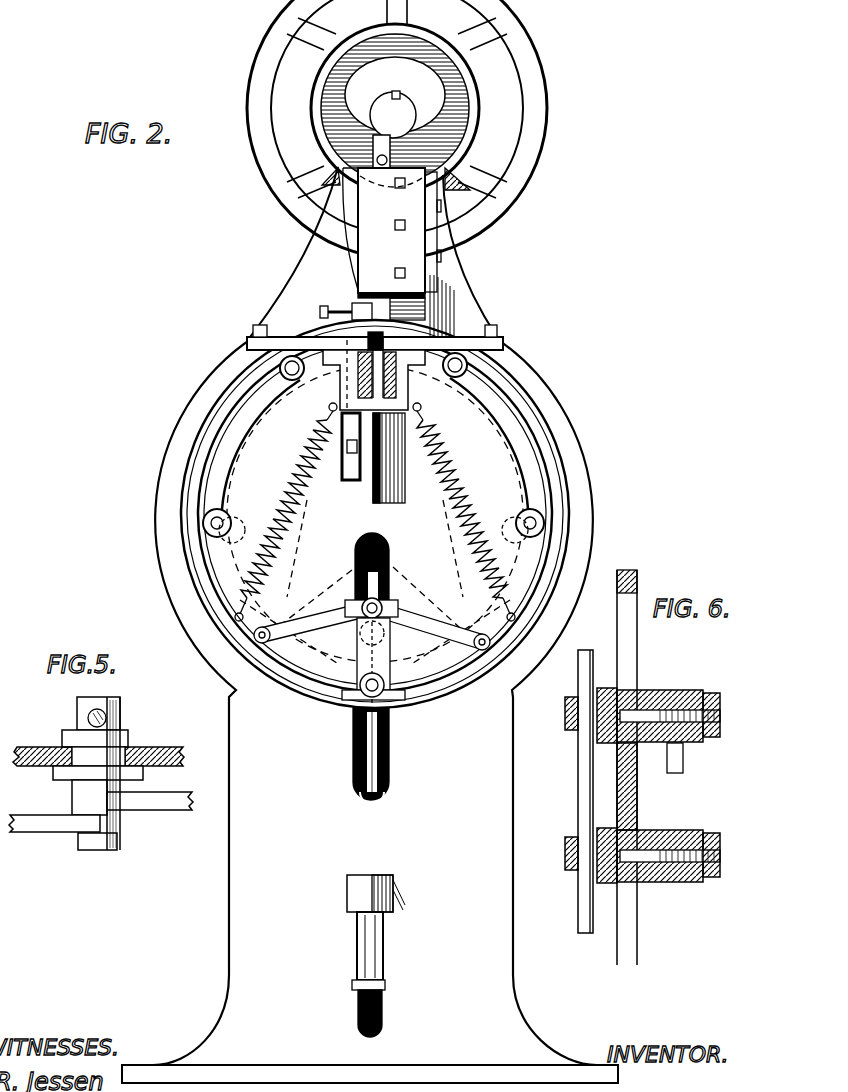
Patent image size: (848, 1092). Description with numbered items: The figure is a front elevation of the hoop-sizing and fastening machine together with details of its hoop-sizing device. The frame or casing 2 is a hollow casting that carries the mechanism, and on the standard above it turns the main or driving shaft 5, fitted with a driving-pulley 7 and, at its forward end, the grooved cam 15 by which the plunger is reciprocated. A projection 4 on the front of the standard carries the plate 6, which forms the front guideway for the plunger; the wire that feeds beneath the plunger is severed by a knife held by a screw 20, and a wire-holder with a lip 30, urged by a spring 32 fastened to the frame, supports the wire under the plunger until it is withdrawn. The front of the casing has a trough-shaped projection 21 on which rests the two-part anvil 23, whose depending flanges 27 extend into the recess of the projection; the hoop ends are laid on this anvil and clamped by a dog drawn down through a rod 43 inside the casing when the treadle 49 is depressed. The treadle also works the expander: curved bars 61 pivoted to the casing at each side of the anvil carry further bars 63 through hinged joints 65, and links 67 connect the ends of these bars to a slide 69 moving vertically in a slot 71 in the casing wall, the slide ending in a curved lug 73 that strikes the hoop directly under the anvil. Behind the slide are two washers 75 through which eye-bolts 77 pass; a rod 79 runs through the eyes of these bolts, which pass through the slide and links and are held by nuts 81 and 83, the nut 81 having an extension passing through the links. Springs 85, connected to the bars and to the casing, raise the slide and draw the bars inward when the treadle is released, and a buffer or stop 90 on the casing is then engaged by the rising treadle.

In FIG. 2, the frame or casing 2 is at (370, 625).
In FIG. 5, the frame or casing 2 is at (170, 750).
In FIG. 2, the projection 4 is at (415, 306).
In FIG. 2, the main or driving shaft 5 is at (393, 114).
In FIG. 2, the plate 6 is at (391, 233).
In FIG. 2, the driving-pulley 7 is at (537, 141).
In FIG. 2, the grooved cam 15 is at (470, 113).
In FIG. 2, the screw 20 is at (325, 314).
In FIG. 2, the projection 21 is at (347, 372).
In FIG. 2, the anvil 23 is at (392, 363).
In FIG. 2, the depending flange 27 is at (392, 383).
In FIG. 2, the lip 30 is at (381, 298).
In FIG. 2, the spring 32 is at (347, 249).
In FIG. 2, the rod 43 is at (352, 478).
In FIG. 2, the treadle 49 is at (387, 984).
In FIG. 2, the curved bars 61 is at (243, 415).
In FIG. 2, the bars 63 is at (210, 577).
In FIG. 2, the hinged joints 65 is at (210, 523).
In FIG. 2, the links 67 is at (327, 627).
In FIG. 5, the links 67 is at (160, 800).
In FIG. 6, the links 67 is at (690, 690).
In FIG. 2, the slide 69 is at (360, 668).
In FIG. 5, the slide 69 is at (72, 790).
In FIG. 6, the slide 69 is at (637, 800).
In FIG. 2, the slot 71 is at (357, 753).
In FIG. 2, the curved lug 73 is at (393, 688).
In FIG. 6, the curved lug 73 is at (660, 885).
In FIG. 5, the washers 75 is at (128, 738).
In FIG. 6, the washers 75 is at (605, 688).
In FIG. 5, the eye-bolts 77 is at (122, 705).
In FIG. 6, the eye-bolts 77 is at (565, 728).
In FIG. 2, the rod 79 is at (367, 800).
In FIG. 5, the rod 79 is at (88, 718).
In FIG. 6, the rod 79 is at (585, 790).
In FIG. 5, the nut 81 is at (97, 850).
In FIG. 6, the nut 81 is at (713, 693).
In FIG. 6, the nut 83 is at (700, 835).
In FIG. 2, the springs 85 is at (292, 500).
In FIG. 2, the buffer or stop 90 is at (358, 913).